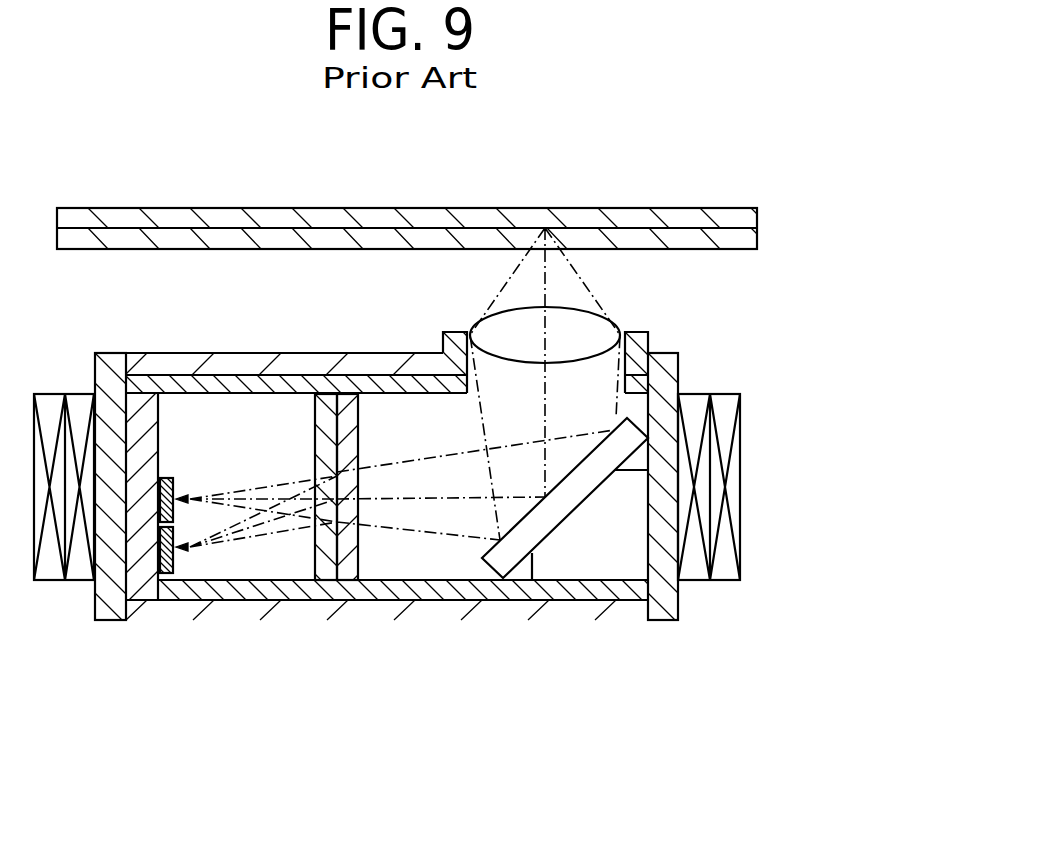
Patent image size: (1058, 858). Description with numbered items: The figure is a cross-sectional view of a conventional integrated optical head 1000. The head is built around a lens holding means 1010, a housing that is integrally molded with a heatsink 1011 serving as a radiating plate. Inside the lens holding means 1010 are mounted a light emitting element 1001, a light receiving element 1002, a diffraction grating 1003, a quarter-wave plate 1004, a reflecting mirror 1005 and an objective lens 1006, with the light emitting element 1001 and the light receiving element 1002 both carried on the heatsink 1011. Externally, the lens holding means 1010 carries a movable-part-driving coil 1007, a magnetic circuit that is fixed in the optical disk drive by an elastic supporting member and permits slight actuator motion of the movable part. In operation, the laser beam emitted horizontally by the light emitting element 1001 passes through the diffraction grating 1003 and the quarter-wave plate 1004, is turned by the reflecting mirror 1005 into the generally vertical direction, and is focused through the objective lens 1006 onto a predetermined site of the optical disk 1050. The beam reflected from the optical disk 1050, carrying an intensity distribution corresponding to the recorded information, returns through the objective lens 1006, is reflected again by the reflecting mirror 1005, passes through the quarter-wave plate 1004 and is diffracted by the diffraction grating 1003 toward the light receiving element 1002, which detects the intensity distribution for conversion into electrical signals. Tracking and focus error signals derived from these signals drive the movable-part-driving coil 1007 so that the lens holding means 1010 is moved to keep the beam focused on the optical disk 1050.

The optical head 1000 is at (810, 341).
The light emitting element 1001 is at (168, 478).
The light receiving element 1002 is at (165, 575).
The diffraction grating 1003 is at (327, 573).
The quarter-wave plate 1004 is at (350, 393).
The reflecting mirror 1005 is at (548, 520).
The objective lens 1006 is at (576, 334).
The movable-part-driving coil 1007 is at (692, 570).
The lens holding means 1010 is at (113, 605).
The heatsink 1011 is at (287, 613).
The optical disk 1050 is at (163, 240).